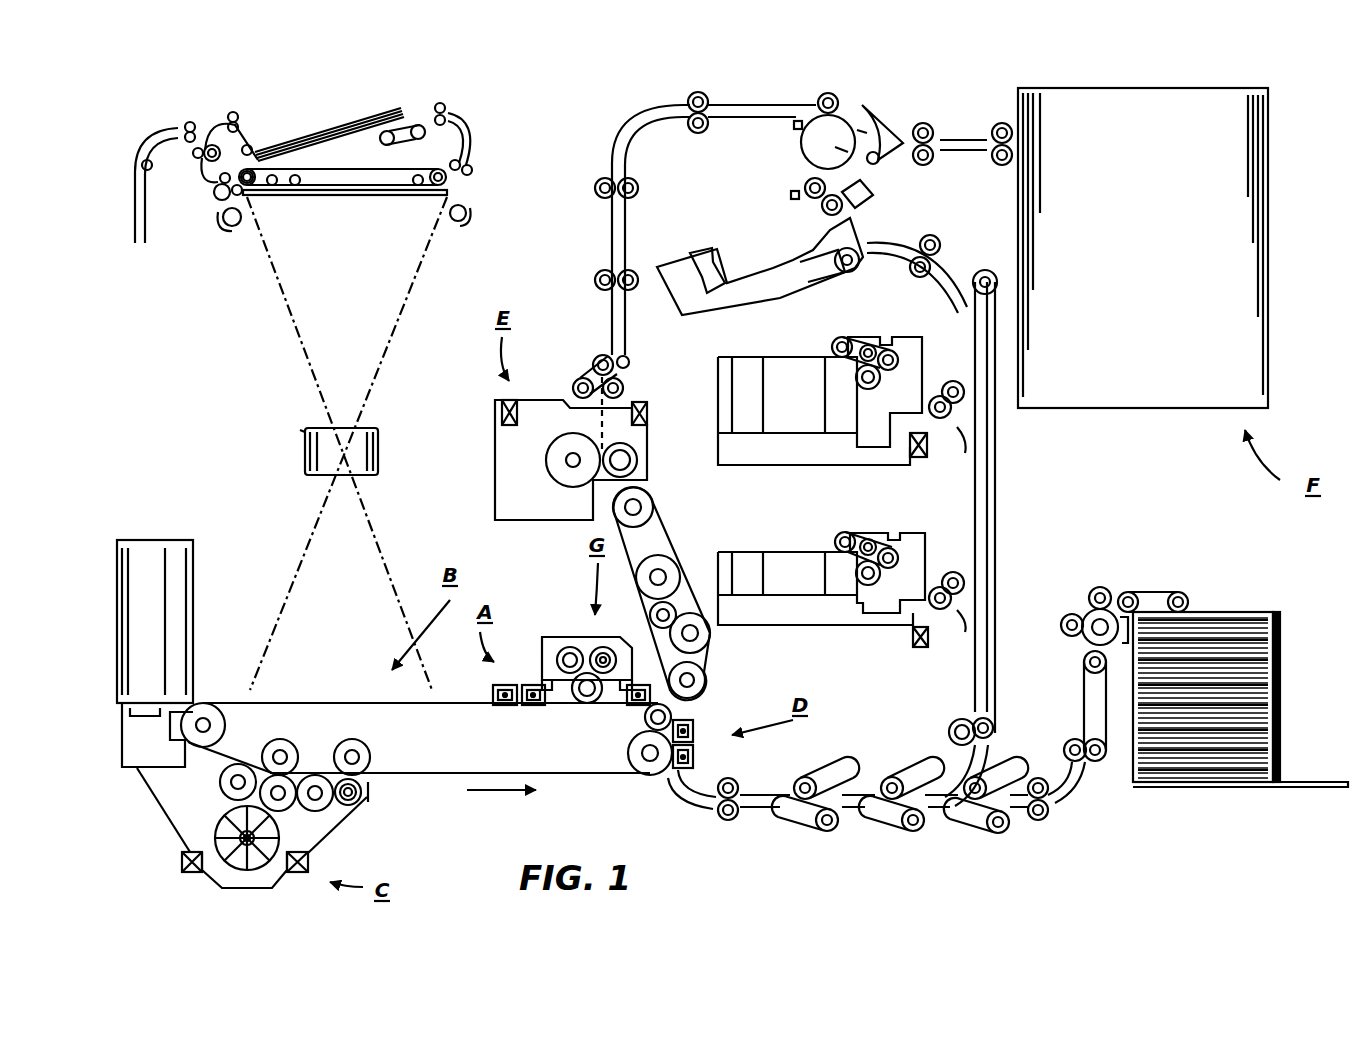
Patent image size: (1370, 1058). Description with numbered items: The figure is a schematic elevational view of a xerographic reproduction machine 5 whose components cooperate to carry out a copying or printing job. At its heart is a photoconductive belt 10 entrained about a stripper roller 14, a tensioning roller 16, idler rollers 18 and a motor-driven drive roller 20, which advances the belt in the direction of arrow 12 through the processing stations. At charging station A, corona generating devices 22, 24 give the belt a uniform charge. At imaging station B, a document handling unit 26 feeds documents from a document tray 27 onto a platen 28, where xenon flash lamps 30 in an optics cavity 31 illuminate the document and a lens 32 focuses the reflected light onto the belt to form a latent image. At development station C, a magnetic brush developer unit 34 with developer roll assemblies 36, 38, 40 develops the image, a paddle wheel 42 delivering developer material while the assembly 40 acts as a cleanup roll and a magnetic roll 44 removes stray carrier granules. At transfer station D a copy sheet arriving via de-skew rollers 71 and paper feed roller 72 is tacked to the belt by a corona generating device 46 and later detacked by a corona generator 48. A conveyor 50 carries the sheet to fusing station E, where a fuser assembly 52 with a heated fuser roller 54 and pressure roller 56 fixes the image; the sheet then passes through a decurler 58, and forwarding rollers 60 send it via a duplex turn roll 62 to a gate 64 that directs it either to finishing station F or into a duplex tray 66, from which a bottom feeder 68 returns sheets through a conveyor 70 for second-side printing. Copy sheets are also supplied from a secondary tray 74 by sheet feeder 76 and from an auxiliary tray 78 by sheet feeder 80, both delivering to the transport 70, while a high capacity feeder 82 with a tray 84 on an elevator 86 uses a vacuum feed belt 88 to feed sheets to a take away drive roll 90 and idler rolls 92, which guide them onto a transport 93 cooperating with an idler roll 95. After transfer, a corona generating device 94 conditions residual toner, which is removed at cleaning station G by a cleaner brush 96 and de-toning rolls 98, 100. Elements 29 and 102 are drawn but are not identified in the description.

The xerographic reproduction machine 5 is at (247, 106).
The photoconductive belt 10 is at (473, 710).
The arrow 12 is at (508, 797).
The stripper roller 14 is at (646, 720).
The tensioning roller 16 is at (220, 703).
The idler rollers 18 is at (283, 740).
The drive roller 20 is at (632, 760).
The corona generating device 22 is at (527, 685).
The corona generating device 24 is at (492, 692).
The document handling unit 26 is at (496, 142).
The document tray 27 is at (365, 141).
The platen 28 is at (387, 192).
The roller 29 is at (242, 197).
The xenon flash lamps 30 is at (228, 230).
The optics cavity 31 is at (238, 413).
The lens 32 is at (378, 448).
The magnetic brush developer unit 34 is at (364, 823).
The developer roll assembly 36 is at (217, 795).
The developer roll assembly 38 is at (246, 803).
The developer roll assembly 40 is at (299, 817).
The paddle wheel 42 is at (182, 858).
The magnetic roll 44 is at (372, 795).
The corona generating device 46 is at (694, 758).
The corona generator 48 is at (694, 722).
The conveyor 50 is at (705, 660).
The fuser assembly 52 is at (668, 417).
The heated fuser roller 54 is at (556, 466).
The pressure roller 56 is at (630, 462).
The decurler 58 is at (582, 372).
The forwarding rollers 60 is at (600, 183).
The duplex turn roll 62 is at (876, 164).
The gate 64 is at (880, 124).
The duplex tray 66 is at (742, 283).
The bottom feeder 68 is at (839, 278).
The conveyor 70 is at (996, 488).
The de-skew rollers 71 is at (913, 775).
The paper feed roller 72 is at (708, 806).
The secondary tray 74 is at (825, 456).
The sheet feeder 76 is at (868, 338).
The auxiliary tray 78 is at (870, 623).
The sheet feeder 80 is at (857, 537).
The high capacity feeder 82 is at (1302, 592).
The tray 84 is at (1227, 757).
The elevator 86 is at (1243, 788).
The vacuum feed belt 88 is at (1167, 588).
The take away drive roll 90 is at (1090, 637).
The idler rolls 92 is at (1100, 586).
The transport 93 is at (1083, 698).
The corona generating device 94 is at (652, 693).
The idler roll 95 is at (1087, 765).
The cleaner brush 96 is at (587, 650).
The de-toning roll 98 is at (600, 650).
The de-toning roll 100 is at (563, 657).
The roller pair 102 is at (923, 121).